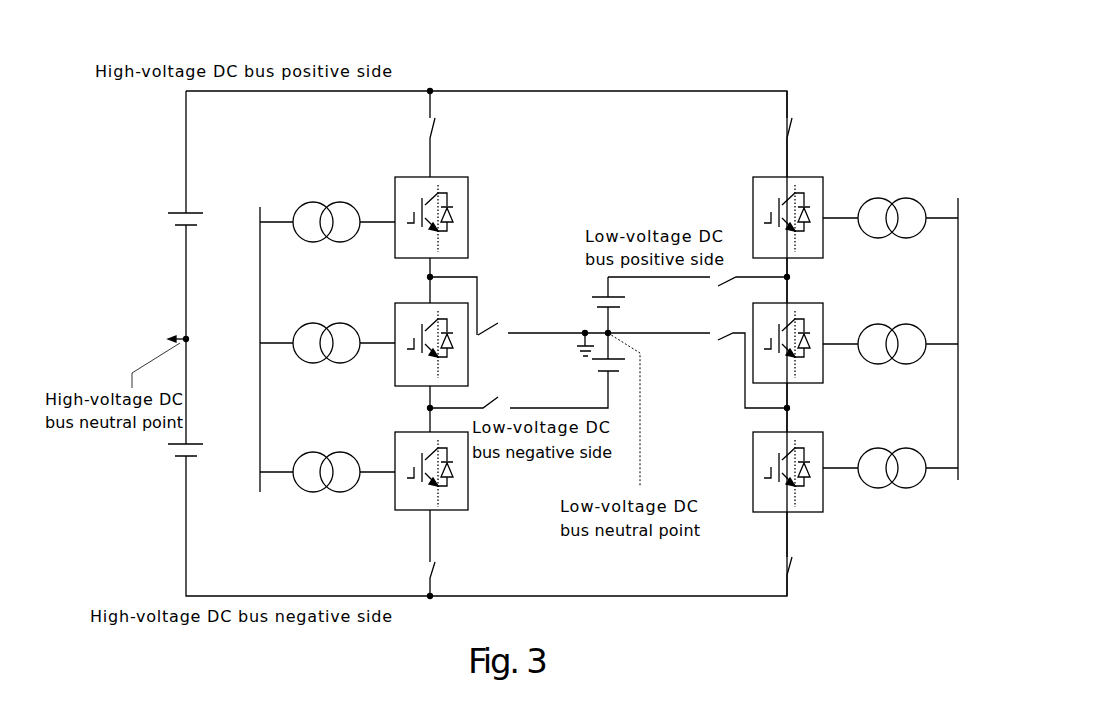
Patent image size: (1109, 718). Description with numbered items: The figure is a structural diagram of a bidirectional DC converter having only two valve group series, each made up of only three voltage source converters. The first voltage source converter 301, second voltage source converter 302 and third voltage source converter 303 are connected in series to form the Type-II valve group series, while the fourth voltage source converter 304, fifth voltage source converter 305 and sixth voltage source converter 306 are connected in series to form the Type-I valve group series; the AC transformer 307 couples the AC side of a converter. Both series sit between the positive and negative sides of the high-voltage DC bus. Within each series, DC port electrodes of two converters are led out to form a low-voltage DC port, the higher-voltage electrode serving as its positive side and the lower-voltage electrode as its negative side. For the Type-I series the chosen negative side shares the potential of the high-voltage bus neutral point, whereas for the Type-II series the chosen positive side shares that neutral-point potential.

The voltage source converter VSC1 301 is at (437, 177).
The voltage source converter VSC2 302 is at (437, 303).
The voltage source converter VSC3 303 is at (438, 512).
The voltage source converter VSC4 304 is at (795, 177).
The voltage source converter VSC5 305 is at (795, 303).
The voltage source converter VSC6 306 is at (797, 512).
The AC transformer 307 is at (322, 203).